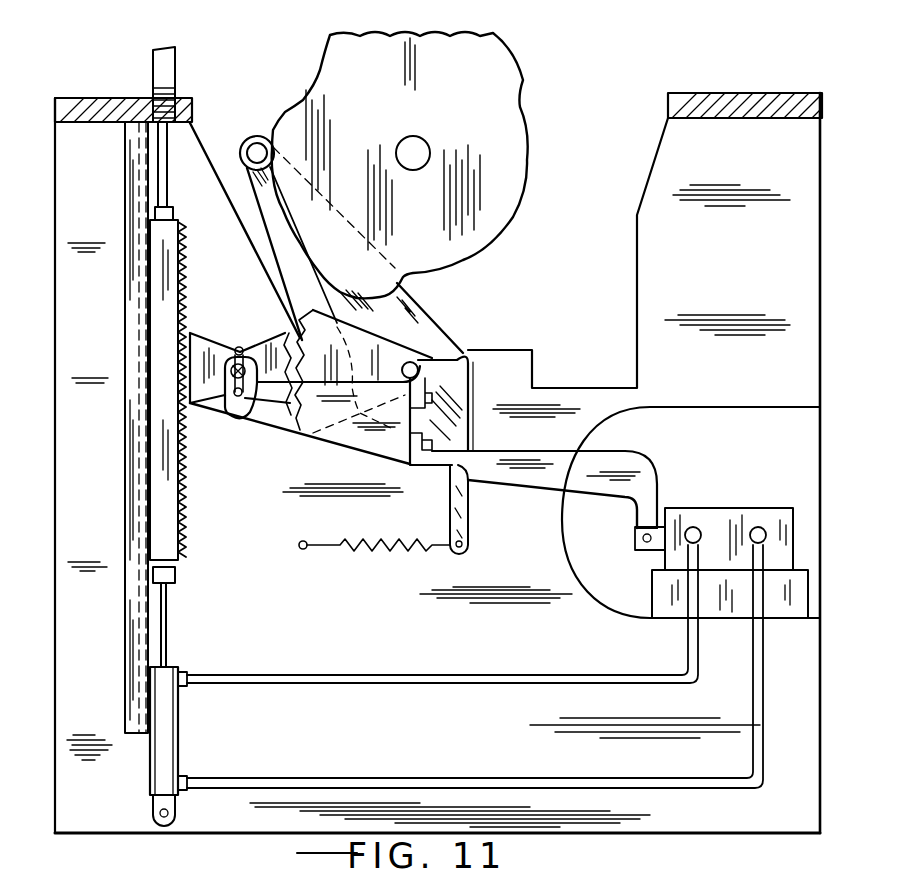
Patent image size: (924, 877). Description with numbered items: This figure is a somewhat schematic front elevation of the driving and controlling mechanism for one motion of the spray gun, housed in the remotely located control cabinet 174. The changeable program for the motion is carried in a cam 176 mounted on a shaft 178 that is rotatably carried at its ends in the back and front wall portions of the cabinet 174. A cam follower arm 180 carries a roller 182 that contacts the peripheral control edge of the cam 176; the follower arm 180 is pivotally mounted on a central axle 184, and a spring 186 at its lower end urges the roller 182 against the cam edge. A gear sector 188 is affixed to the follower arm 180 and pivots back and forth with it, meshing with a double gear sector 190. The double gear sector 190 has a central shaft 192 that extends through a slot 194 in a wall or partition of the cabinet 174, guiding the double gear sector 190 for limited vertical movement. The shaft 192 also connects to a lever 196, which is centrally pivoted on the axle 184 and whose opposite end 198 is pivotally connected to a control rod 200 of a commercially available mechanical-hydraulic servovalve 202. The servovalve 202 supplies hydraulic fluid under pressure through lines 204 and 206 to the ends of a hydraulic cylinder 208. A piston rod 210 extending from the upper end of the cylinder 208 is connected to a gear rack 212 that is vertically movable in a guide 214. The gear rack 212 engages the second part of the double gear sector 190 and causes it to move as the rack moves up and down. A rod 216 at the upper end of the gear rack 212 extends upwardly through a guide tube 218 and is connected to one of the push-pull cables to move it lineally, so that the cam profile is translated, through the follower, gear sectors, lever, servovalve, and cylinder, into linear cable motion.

The control cabinet 174 is at (102, 96).
The cam 176 is at (516, 216).
The shaft 178 is at (428, 137).
The cam follower arm 180 is at (440, 324).
The roller 182 is at (260, 134).
The central axle 184 is at (482, 354).
The spring 186 is at (410, 560).
The gear sector 188 is at (396, 304).
The double gear sector 190 is at (270, 330).
The central shaft 192 is at (257, 403).
The slot 194 is at (238, 346).
The lever 196 is at (324, 440).
The opposite end 198 is at (632, 512).
The control rod 200 is at (634, 546).
The mechanical-hydraulic servovalve 202 is at (713, 508).
The hydraulic line 204 is at (410, 686).
The hydraulic line 206 is at (345, 779).
The hydraulic cylinder 208 is at (180, 721).
The piston rod 210 is at (170, 631).
The gear rack 212 is at (187, 484).
The guide 214 is at (172, 598).
The rod 216 is at (168, 170).
The guide tube 218 is at (156, 68).